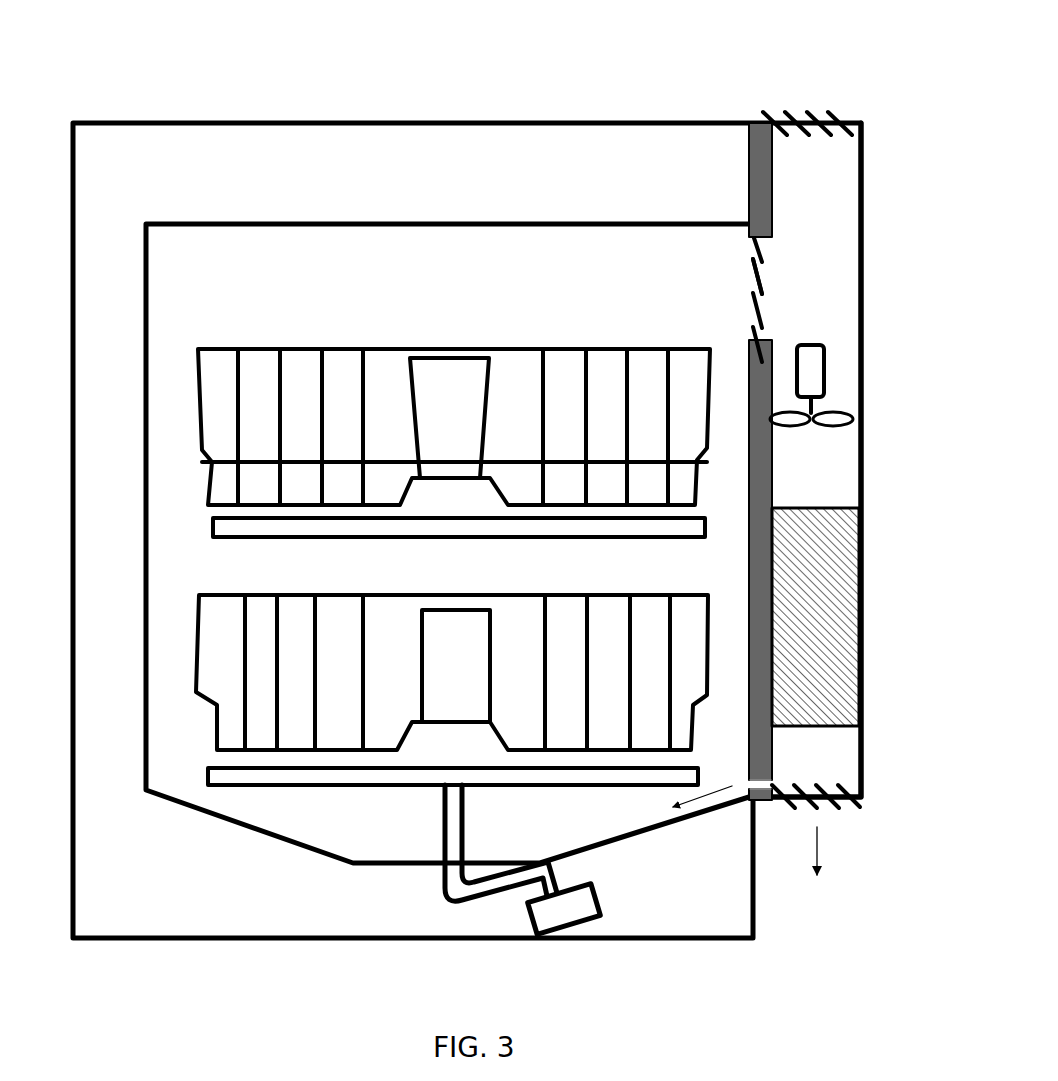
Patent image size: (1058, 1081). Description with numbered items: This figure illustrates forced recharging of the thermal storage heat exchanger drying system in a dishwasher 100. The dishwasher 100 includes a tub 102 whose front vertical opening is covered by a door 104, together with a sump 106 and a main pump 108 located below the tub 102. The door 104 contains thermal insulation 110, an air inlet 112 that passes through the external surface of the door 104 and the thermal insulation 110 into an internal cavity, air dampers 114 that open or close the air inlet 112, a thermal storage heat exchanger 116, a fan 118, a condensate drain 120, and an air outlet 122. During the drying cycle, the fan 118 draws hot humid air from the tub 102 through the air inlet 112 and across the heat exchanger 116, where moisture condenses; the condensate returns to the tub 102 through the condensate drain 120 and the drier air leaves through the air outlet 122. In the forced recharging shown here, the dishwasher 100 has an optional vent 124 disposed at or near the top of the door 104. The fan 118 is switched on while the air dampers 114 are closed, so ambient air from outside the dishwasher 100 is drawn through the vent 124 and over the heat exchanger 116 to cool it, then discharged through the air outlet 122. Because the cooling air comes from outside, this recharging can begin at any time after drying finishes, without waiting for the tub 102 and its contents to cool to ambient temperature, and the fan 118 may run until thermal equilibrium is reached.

The dishwasher 100 is at (350, 65).
The tub 102 is at (198, 262).
The door 104 is at (862, 242).
The sump 106 is at (420, 838).
The main pump 108 is at (597, 896).
The thermal insulation 110 is at (757, 121).
The air inlet 112 is at (740, 280).
The air dampers 114 is at (757, 312).
The thermal storage heat exchanger 116 is at (835, 548).
The fan 118 is at (812, 357).
The condensate drain 120 is at (777, 782).
The air outlet 122 is at (822, 822).
The vent 124 is at (818, 106).